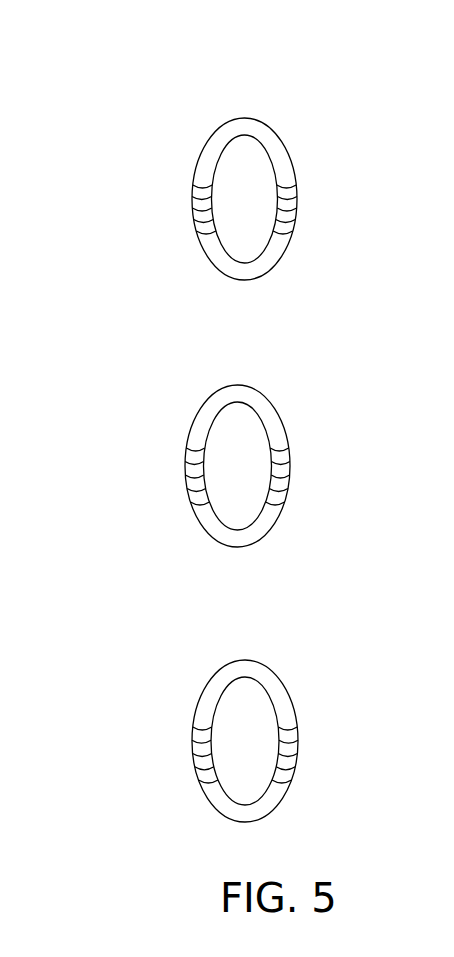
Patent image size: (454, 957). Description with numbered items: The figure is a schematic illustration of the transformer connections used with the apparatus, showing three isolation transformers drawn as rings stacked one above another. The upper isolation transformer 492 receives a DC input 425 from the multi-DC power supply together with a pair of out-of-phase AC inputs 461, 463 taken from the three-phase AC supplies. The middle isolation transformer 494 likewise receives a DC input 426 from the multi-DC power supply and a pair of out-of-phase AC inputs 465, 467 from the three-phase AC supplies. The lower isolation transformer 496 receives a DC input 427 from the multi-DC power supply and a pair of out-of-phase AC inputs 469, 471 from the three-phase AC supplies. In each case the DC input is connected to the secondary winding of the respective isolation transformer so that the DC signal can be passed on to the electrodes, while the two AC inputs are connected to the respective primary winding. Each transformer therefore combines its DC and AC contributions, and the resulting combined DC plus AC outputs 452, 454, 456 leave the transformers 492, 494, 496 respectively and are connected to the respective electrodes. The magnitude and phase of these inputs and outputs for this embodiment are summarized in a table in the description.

The isolation transformer 492 is at (275, 114).
The isolation transformer 494 is at (285, 391).
The isolation transformer 496 is at (278, 664).
The combined DC+AC output 452 is at (193, 183).
The combined DC+AC output 454 is at (185, 450).
The combined DC+AC output 456 is at (193, 725).
The DC input 425 is at (190, 243).
The DC input 426 is at (183, 510).
The DC input 427 is at (190, 785).
The AC input 461 is at (415, 183).
The AC input 463 is at (405, 243).
The AC input 465 is at (407, 452).
The AC input 467 is at (398, 510).
The AC input 469 is at (413, 725).
The AC input 471 is at (405, 785).